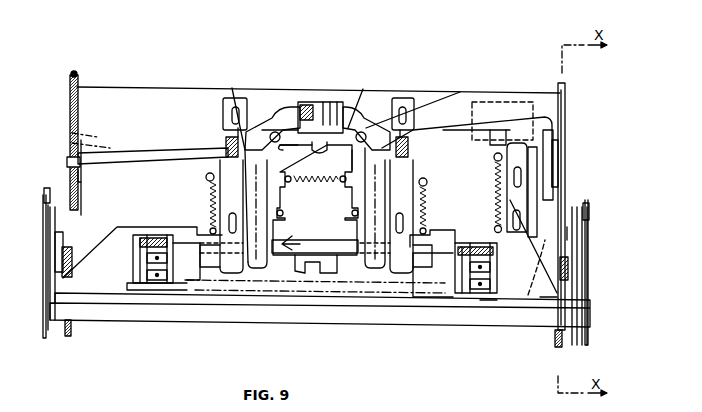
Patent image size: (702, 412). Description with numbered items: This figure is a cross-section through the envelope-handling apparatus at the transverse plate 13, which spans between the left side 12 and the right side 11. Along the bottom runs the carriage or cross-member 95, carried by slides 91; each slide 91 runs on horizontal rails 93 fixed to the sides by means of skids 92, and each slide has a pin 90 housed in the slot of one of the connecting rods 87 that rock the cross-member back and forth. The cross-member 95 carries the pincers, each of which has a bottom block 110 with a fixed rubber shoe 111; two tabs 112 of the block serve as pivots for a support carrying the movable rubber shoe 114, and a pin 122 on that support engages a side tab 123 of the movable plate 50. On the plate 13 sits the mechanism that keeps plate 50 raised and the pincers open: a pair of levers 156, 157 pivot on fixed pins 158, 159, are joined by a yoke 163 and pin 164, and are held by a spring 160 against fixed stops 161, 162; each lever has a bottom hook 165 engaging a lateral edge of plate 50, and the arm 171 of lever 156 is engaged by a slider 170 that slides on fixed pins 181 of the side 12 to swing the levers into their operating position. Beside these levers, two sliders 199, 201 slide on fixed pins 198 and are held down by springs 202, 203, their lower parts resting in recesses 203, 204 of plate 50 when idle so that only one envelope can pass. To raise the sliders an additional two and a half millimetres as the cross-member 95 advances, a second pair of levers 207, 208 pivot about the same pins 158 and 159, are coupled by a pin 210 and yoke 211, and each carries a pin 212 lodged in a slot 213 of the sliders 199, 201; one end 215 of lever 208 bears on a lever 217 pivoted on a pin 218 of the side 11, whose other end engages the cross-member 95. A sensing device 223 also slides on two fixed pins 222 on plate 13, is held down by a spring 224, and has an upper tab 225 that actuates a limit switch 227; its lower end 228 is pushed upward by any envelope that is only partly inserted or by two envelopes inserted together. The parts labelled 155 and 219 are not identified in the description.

The side 11 is at (565, 85).
The side 12 is at (71, 77).
The transverse plate 13 is at (108, 92).
The movable plate 50 is at (292, 237).
The connecting rods 87 is at (44, 340).
The pin 90 is at (596, 208).
The slide 91 is at (52, 255).
The skids 92 is at (60, 238).
The horizontal rails 93 is at (62, 265).
The cross-member 95 is at (180, 316).
The bottom block 110 is at (133, 293).
The fixed rubber shoe 111 is at (142, 287).
The tabs 112 is at (160, 282).
The movable rubber shoe 114 is at (133, 236).
The pin 122 is at (180, 243).
The side tab 123 is at (313, 270).
The lower tab 155 is at (312, 274).
The lever 156 is at (272, 160).
The lever 157 is at (360, 160).
The fixed pin 158 is at (273, 131).
The fixed pin 159 is at (363, 132).
The spring 160 is at (308, 184).
The fixed stop 161 is at (283, 213).
The fixed stop 162 is at (344, 217).
The yoke 163 is at (320, 145).
The pin 164 is at (322, 127).
The bottom hook 165 is at (256, 269).
The slider 170 is at (79, 181).
The arm 171 is at (135, 158).
The fixed pins 181 is at (81, 197).
The fixed pins 198 is at (223, 108).
The slider 199 is at (206, 177).
The slider 201 is at (410, 168).
The spring 202 is at (209, 188).
The spring 203 is at (219, 275).
The recess 204 is at (402, 275).
The lever 207 is at (270, 115).
The lever 208 is at (447, 127).
The pin 210 is at (310, 102).
The yoke 211 is at (302, 105).
The pin 212 is at (232, 130).
The slot 213 is at (226, 147).
The end 215 is at (555, 150).
The lever 217 is at (563, 182).
The pin 218 is at (533, 249).
The foot 219 is at (550, 298).
The fixed pins 222 is at (496, 153).
The sensing device 223 is at (512, 200).
The spring 224 is at (494, 172).
The upper tab 225 is at (498, 140).
The limit switch 227 is at (518, 102).
The lower end 228 is at (488, 300).